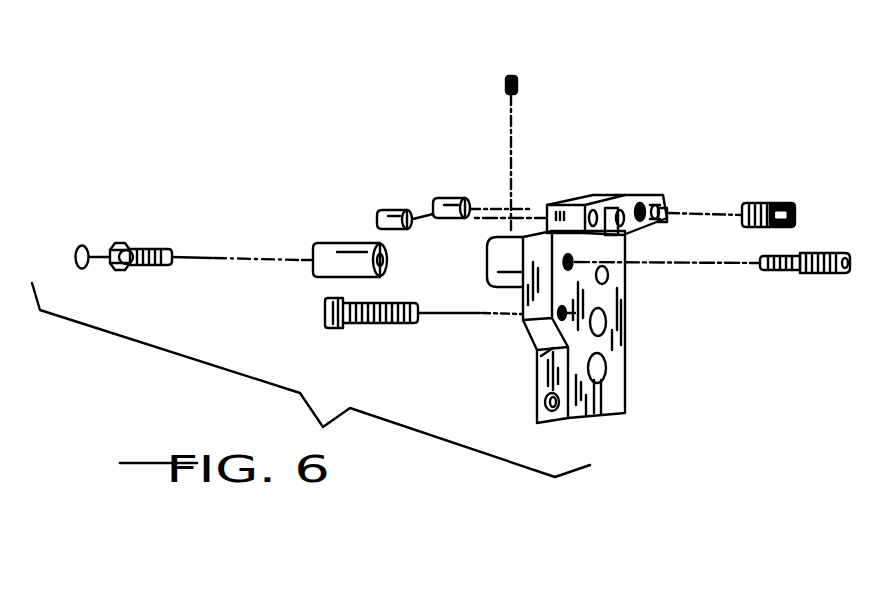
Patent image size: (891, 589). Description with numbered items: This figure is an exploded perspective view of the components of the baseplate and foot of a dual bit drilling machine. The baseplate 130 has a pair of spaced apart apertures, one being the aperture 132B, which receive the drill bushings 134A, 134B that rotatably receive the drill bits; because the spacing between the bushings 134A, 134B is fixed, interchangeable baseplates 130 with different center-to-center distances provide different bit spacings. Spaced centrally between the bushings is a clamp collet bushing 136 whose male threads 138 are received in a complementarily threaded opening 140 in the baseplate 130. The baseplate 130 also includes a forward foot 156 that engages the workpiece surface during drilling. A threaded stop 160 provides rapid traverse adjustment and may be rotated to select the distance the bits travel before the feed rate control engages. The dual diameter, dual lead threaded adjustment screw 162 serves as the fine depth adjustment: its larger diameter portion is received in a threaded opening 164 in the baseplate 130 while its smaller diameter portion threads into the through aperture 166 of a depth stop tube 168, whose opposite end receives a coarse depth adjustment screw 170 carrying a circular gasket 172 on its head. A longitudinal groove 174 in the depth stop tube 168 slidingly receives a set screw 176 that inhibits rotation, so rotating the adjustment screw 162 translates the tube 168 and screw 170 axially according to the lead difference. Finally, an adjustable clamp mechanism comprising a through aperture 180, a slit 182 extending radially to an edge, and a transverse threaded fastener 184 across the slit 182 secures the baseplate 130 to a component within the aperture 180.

The baseplate 130 is at (585, 345).
The aperture 132B is at (592, 197).
The drill bushing 134A is at (447, 198).
The drill bushing 134B is at (383, 210).
The clamp collet bushing 136 is at (787, 203).
The male threads 138 is at (748, 203).
The threaded opening 140 is at (640, 198).
The forward foot 156 is at (663, 195).
The threaded stop 160 is at (393, 328).
The threaded adjustment screw 162 is at (800, 275).
The threaded opening 164 is at (572, 258).
The through aperture 166 is at (385, 265).
The depth stop tube 168 is at (313, 247).
The coarse depth adjustment screw 170 is at (150, 247).
The circular gasket 172 is at (72, 247).
The longitudinal groove 174 is at (347, 243).
The set screw 176 is at (518, 83).
The through aperture 180 is at (593, 362).
The slit 182 is at (604, 410).
The threaded fastener 184 is at (545, 405).